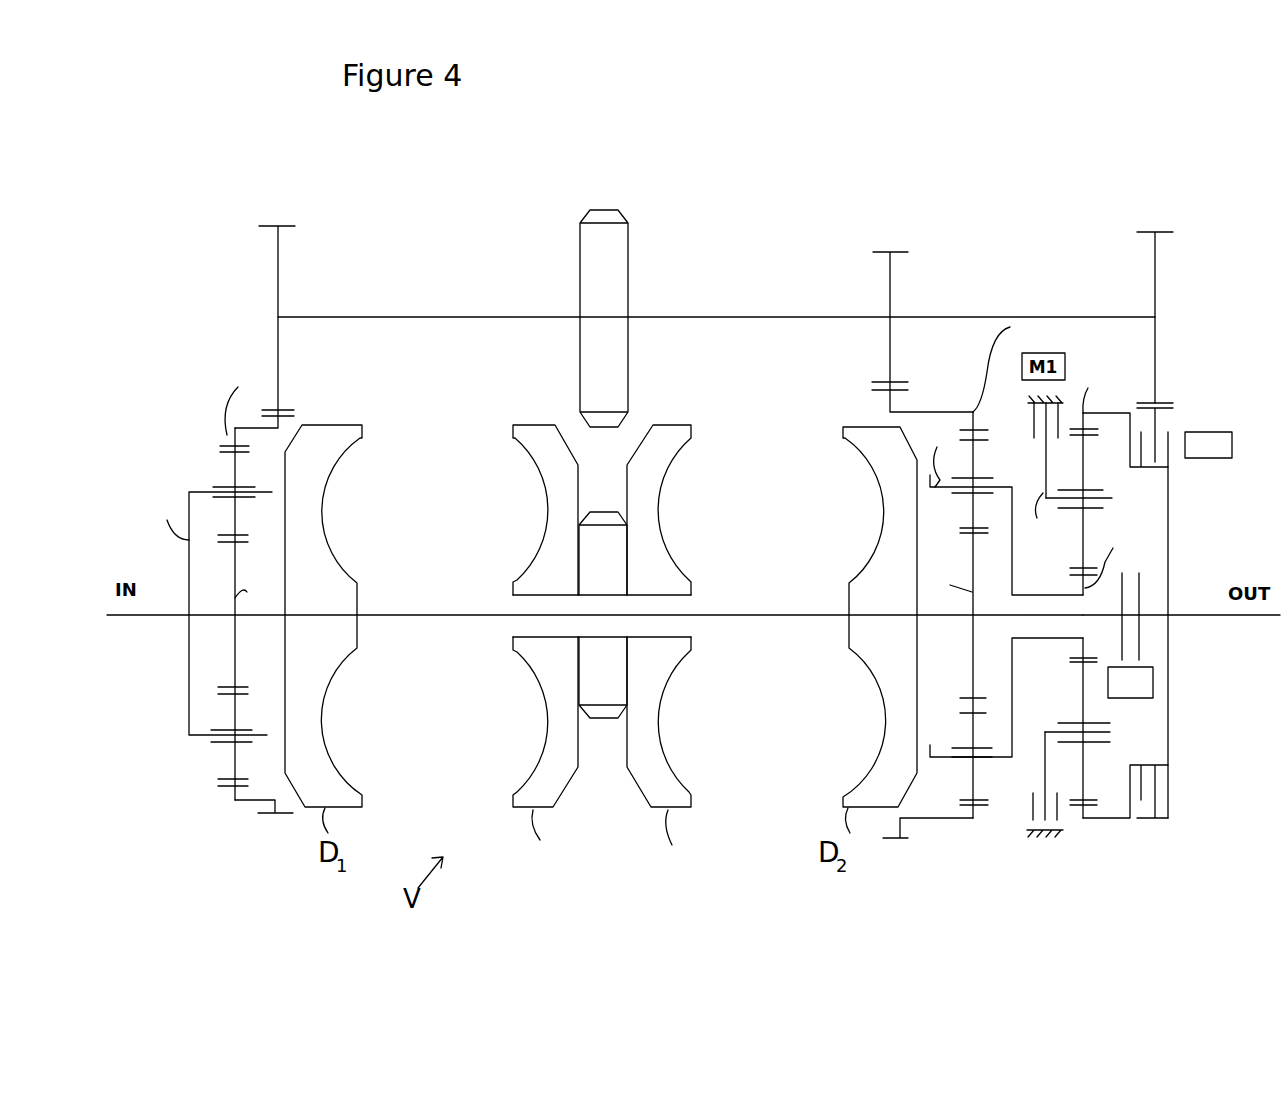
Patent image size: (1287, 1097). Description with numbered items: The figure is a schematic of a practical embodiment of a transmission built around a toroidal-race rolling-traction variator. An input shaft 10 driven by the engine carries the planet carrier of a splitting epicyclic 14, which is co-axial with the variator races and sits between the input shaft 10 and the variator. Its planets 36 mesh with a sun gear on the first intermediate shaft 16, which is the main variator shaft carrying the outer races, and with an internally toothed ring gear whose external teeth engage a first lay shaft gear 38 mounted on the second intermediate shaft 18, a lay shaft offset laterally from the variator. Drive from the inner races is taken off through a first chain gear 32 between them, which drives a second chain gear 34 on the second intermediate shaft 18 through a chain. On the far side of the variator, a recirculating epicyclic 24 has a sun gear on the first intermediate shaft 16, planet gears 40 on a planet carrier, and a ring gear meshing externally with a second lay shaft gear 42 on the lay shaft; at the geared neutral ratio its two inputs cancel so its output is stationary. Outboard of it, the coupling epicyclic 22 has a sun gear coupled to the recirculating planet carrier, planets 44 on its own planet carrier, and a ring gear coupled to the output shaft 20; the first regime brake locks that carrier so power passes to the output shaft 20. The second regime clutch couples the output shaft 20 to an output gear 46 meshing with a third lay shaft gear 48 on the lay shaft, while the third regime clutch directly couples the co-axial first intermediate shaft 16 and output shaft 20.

The input shaft 10 is at (130, 618).
The splitting epicyclic 14 is at (210, 378).
The first intermediate shaft 16 is at (430, 618).
The second intermediate shaft 18 is at (703, 317).
The output shaft 20 is at (1233, 620).
The coupling epicyclic gear 22 is at (1105, 384).
The recirculating epicyclic gear 24 is at (958, 388).
The first chain gear 32 is at (607, 507).
The second chain gear 34 is at (628, 252).
The planets 36 is at (237, 470).
The first lay shaft gear 38 is at (280, 300).
The planet gears 40 is at (975, 462).
The second lay shaft gear 42 is at (892, 300).
The planets 44 is at (1085, 473).
The output gear 46 is at (1158, 428).
The third lay shaft gear 48 is at (1157, 292).